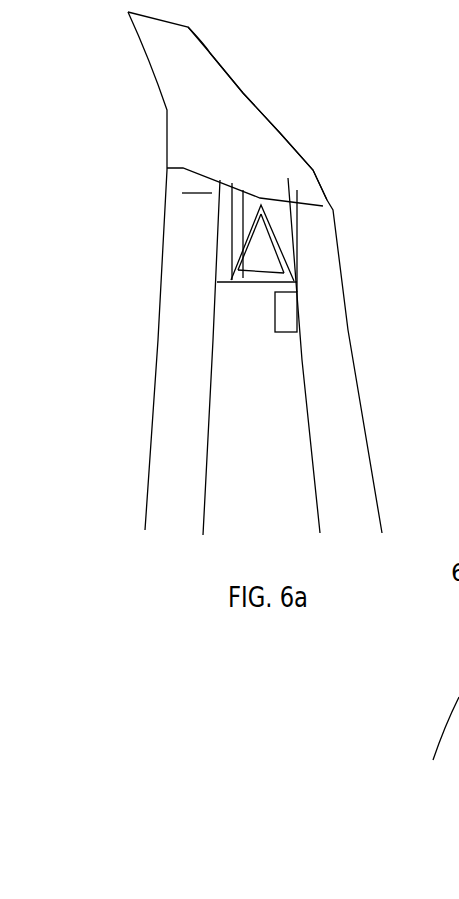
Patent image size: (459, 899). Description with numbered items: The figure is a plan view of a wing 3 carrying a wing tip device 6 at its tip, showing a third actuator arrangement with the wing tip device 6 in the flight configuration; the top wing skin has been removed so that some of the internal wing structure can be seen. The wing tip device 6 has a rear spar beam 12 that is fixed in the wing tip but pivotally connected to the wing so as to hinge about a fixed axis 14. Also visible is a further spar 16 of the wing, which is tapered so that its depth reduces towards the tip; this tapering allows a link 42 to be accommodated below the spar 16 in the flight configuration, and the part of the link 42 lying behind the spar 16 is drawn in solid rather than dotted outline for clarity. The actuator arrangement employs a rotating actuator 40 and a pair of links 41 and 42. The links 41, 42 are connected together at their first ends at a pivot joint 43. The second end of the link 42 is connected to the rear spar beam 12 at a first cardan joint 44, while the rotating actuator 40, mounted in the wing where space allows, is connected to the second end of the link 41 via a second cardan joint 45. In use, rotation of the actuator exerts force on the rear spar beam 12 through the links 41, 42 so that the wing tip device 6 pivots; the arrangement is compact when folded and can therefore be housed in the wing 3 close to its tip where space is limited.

The wing 3 is at (180, 377).
The wing tip device 6 is at (244, 126).
The rear spar beam 12 is at (228, 256).
The fixed axis 14 is at (197, 188).
The further spar 16 is at (238, 213).
The rotating actuator 40 is at (288, 313).
The link 41 is at (274, 249).
The link 42 is at (247, 237).
The pivot joint 43 is at (262, 206).
The first cardan joint 44 is at (233, 268).
The second cardan joint 45 is at (283, 277).